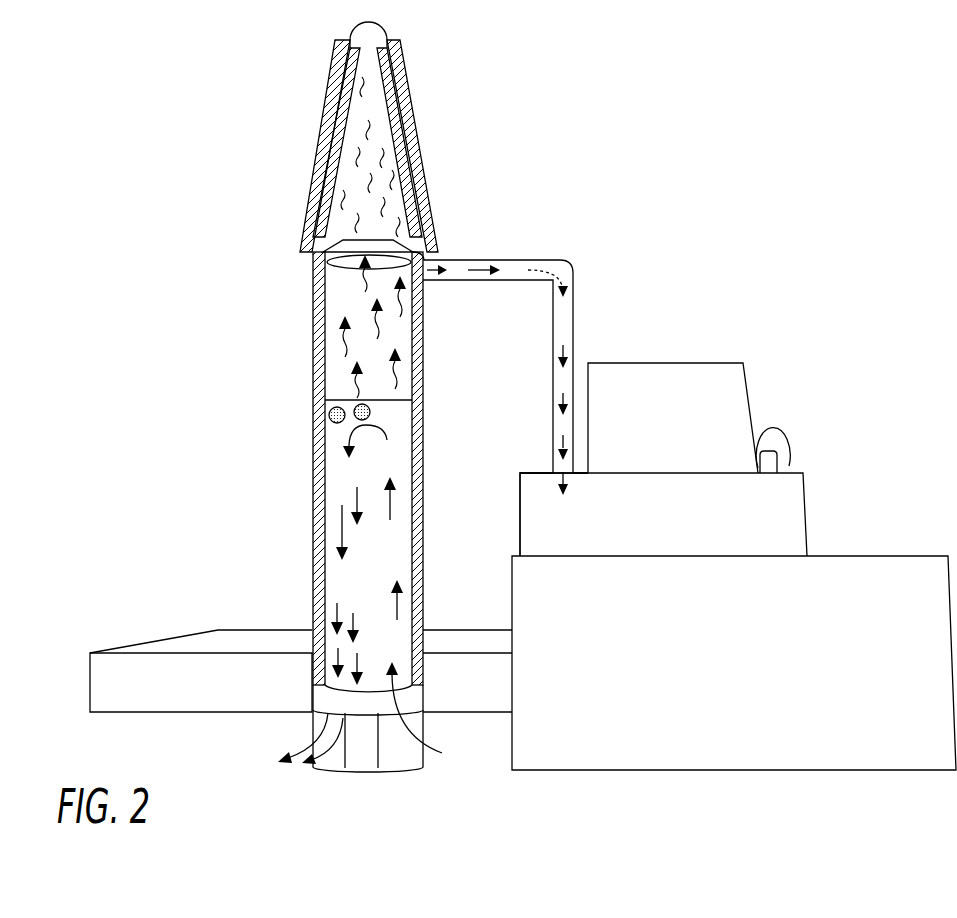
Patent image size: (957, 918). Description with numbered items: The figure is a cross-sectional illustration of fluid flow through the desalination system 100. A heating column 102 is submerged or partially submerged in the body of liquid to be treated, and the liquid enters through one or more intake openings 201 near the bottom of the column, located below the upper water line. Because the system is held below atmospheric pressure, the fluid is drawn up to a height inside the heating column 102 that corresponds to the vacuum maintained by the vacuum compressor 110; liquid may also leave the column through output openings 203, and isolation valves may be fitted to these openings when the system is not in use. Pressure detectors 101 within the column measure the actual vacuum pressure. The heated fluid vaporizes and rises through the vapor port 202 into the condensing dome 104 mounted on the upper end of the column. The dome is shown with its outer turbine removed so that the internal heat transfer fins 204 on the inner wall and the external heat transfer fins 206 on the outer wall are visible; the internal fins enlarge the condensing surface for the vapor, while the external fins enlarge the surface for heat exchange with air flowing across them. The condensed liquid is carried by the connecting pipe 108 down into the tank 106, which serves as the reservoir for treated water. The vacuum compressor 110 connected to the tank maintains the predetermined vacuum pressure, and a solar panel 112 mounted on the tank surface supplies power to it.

The desalination system 100 is at (146, 75).
The pressure detectors 101 is at (312, 412).
The heating column 102 is at (276, 333).
The condensing dome 104 is at (286, 128).
The tank 106 is at (806, 530).
The connecting pipe 108 is at (567, 258).
The vacuum compressor 110 is at (782, 417).
The solar panel 112 is at (652, 363).
The intake openings 201 is at (453, 769).
The vapor port 202 is at (350, 264).
The output openings 203 is at (277, 780).
The internal heat transfer fins 204 is at (316, 227).
The external heat transfer fins 206 is at (306, 197).